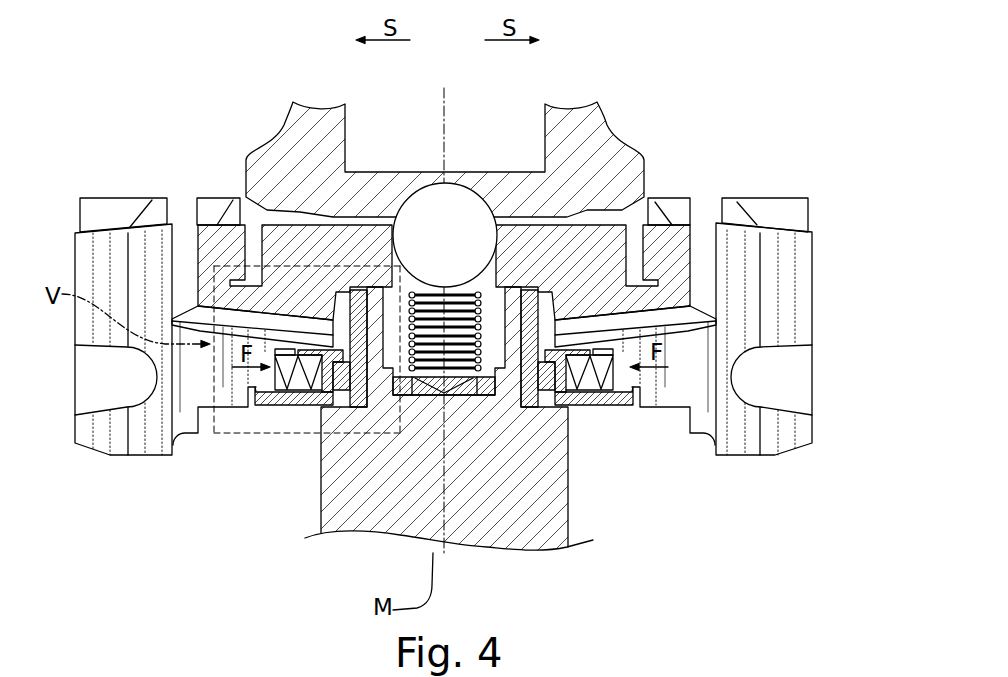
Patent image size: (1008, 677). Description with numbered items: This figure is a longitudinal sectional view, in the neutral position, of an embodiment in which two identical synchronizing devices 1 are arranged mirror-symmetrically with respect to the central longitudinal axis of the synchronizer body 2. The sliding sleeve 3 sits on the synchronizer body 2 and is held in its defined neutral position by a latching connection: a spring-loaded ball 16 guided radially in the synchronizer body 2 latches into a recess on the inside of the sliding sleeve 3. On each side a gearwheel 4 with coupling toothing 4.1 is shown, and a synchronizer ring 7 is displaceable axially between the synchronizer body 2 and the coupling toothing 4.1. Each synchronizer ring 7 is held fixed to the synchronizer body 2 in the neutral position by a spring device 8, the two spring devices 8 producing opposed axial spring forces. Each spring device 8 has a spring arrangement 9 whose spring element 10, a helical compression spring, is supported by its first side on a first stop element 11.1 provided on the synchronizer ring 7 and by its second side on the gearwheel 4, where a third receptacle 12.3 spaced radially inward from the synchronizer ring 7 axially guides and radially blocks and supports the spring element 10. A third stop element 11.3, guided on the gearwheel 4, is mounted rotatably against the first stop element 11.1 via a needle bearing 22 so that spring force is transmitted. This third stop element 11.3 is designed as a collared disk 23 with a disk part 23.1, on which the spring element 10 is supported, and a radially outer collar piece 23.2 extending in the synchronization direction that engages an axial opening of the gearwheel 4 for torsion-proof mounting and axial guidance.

The synchronizing device 1 is at (195, 146).
The synchronizer body 2 is at (510, 540).
The sliding sleeve 3 is at (585, 118).
The gearwheel 4 is at (72, 243).
The coupling toothing 4.1 is at (90, 212).
The synchronizer ring 7 is at (207, 208).
The spring device 8 is at (591, 414).
The spring arrangement 9 is at (310, 387).
The spring element 10 is at (305, 397).
The first stop element 11.1 is at (352, 410).
The third stop element 11.3 is at (262, 388).
The third receptacle 12.3 is at (245, 388).
The spring-loaded ball 16 is at (460, 207).
The needle bearing 22 is at (335, 410).
The collared disk 23 is at (310, 420).
The disk part 23.1 is at (340, 395).
The collar piece 23.2 is at (266, 407).